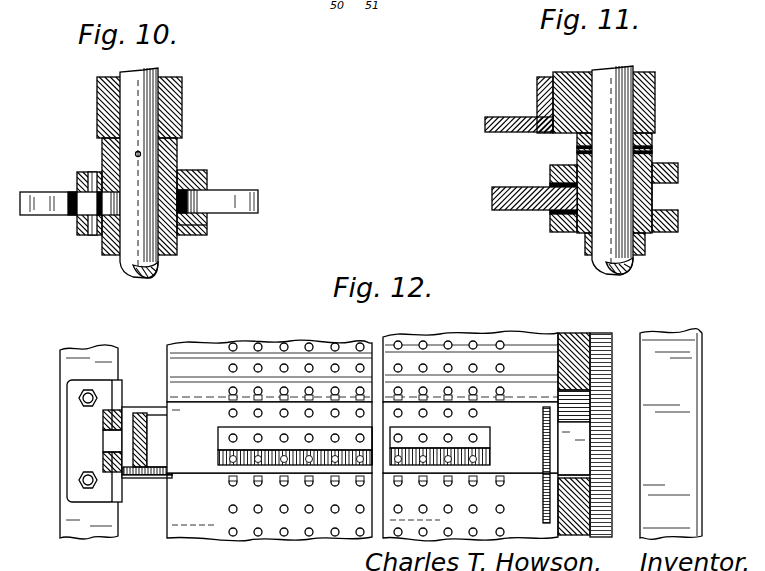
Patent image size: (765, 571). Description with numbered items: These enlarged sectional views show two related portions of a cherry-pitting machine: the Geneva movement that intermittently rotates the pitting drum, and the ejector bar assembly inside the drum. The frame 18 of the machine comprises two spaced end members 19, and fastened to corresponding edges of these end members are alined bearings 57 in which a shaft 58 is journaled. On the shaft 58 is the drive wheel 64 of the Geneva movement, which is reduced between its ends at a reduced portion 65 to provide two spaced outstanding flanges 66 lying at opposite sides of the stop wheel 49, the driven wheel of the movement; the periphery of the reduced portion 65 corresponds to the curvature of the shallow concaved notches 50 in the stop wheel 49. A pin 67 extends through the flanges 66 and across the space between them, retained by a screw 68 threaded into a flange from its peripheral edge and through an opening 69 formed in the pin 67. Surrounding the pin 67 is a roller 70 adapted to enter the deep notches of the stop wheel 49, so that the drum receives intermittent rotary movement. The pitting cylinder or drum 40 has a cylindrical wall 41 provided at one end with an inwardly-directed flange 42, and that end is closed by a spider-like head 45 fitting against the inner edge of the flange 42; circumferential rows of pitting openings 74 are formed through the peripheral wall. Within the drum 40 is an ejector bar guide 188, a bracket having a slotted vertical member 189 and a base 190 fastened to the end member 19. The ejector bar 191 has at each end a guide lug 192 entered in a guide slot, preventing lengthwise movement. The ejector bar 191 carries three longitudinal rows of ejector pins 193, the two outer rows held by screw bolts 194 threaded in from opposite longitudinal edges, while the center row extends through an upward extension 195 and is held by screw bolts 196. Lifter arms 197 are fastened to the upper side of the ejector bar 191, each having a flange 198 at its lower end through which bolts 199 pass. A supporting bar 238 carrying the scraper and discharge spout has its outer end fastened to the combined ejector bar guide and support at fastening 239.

In FIG. 11, the frame 18 is at (500, 132).
In FIG. 11, the end members 19 is at (545, 105).
In FIG. 12, the end members 19 is at (72, 368).
In FIG. 12, the pitting cylinder or drum 40 is at (168, 362).
In FIG. 12, the cylindrical wall 41 is at (215, 537).
In FIG. 12, the inwardly-directed flange 42 is at (553, 344).
In FIG. 12, the head 45 is at (576, 503).
In FIG. 10, the stop wheel 49 is at (237, 190).
In FIG. 11, the stop wheel 49 is at (520, 210).
In FIG. 10, the concaved notches 50 is at (200, 206).
In FIG. 11, the concaved notches 50 is at (565, 185).
In FIG. 10, the bearings 57 is at (182, 117).
In FIG. 11, the bearings 57 is at (575, 78).
In FIG. 10, the shaft 58 is at (135, 278).
In FIG. 11, the shaft 58 is at (613, 273).
In FIG. 10, the drive wheel 64 is at (112, 240).
In FIG. 11, the drive wheel 64 is at (648, 233).
In FIG. 10, the reduced portion 65 is at (190, 226).
In FIG. 11, the reduced portion 65 is at (656, 196).
In FIG. 10, the flanges 66 is at (197, 172).
In FIG. 11, the flanges 66 is at (678, 170).
In FIG. 10, the pin 67 is at (90, 221).
In FIG. 10, the screw 68 is at (77, 180).
In FIG. 10, the opening 69 is at (91, 172).
In FIG. 10, the roller 70 is at (45, 215).
In FIG. 12, the pitting openings 74 is at (284, 345).
In FIG. 12, the ejector bar guide 188 is at (103, 413).
In FIG. 12, the slotted vertical member 189 is at (103, 460).
In FIG. 12, the base 190 is at (76, 443).
In FIG. 12, the ejector bar 191 is at (211, 463).
In FIG. 12, the guide lug 192 is at (120, 436).
In FIG. 12, the ejector pins 193 is at (218, 440).
In FIG. 12, the screw bolts 194 is at (230, 401).
In FIG. 12, the upward extension 195 is at (350, 442).
In FIG. 12, the screw bolts 196 is at (258, 464).
In FIG. 12, the lifter arms 197 is at (128, 458).
In FIG. 12, the flange 198 is at (148, 478).
In FIG. 12, the bolts 199 is at (146, 476).
In FIG. 12, the supporting bar 238 is at (550, 473).
In FIG. 12, the fastening 239 is at (553, 462).